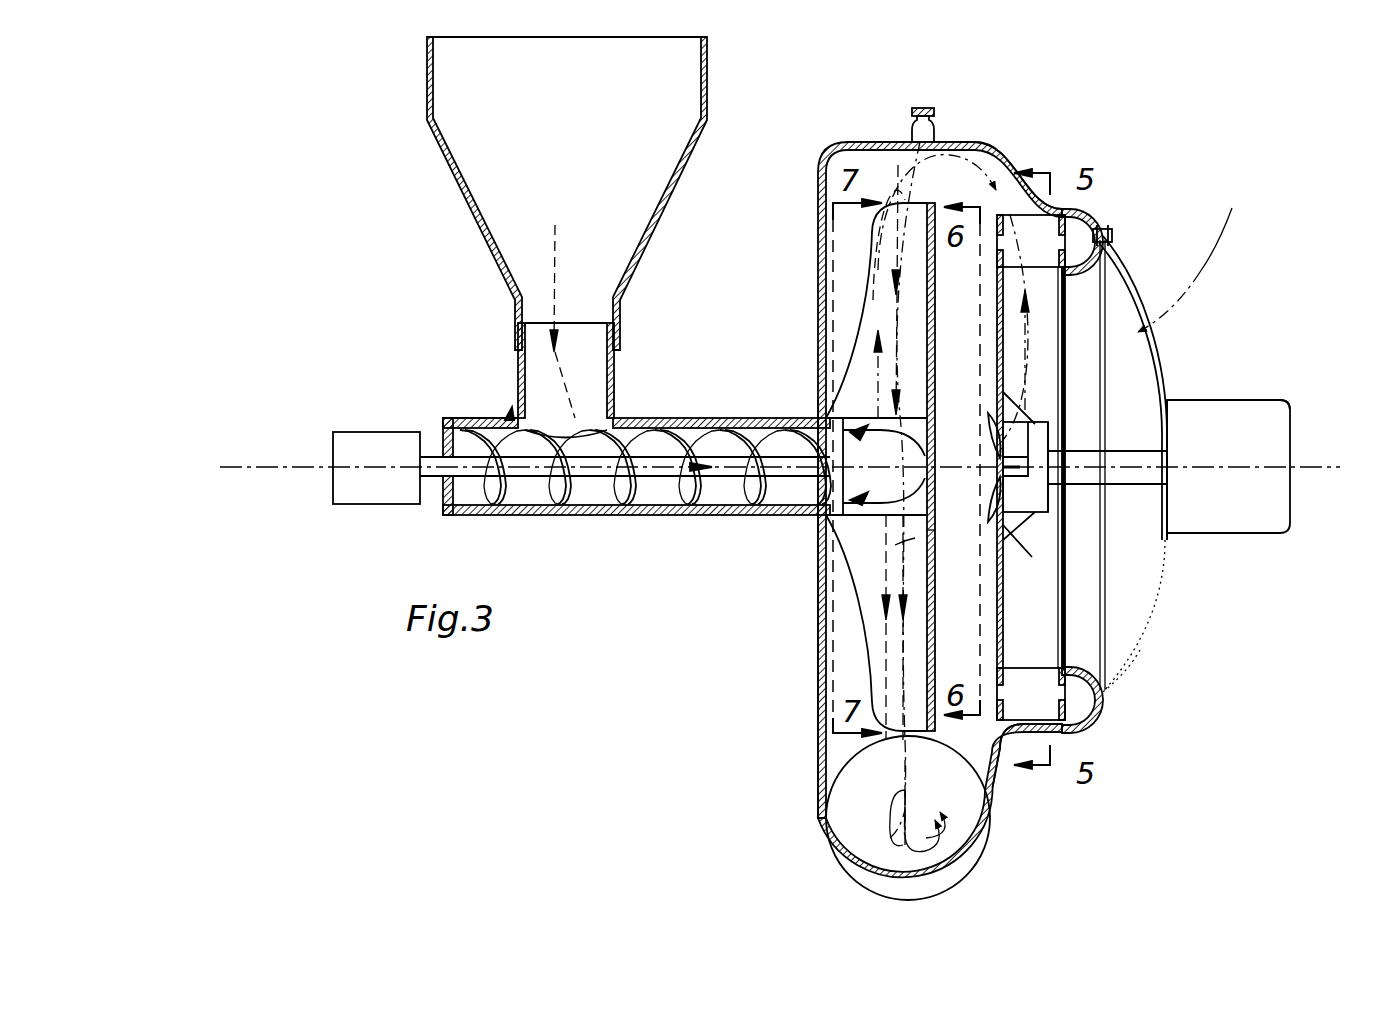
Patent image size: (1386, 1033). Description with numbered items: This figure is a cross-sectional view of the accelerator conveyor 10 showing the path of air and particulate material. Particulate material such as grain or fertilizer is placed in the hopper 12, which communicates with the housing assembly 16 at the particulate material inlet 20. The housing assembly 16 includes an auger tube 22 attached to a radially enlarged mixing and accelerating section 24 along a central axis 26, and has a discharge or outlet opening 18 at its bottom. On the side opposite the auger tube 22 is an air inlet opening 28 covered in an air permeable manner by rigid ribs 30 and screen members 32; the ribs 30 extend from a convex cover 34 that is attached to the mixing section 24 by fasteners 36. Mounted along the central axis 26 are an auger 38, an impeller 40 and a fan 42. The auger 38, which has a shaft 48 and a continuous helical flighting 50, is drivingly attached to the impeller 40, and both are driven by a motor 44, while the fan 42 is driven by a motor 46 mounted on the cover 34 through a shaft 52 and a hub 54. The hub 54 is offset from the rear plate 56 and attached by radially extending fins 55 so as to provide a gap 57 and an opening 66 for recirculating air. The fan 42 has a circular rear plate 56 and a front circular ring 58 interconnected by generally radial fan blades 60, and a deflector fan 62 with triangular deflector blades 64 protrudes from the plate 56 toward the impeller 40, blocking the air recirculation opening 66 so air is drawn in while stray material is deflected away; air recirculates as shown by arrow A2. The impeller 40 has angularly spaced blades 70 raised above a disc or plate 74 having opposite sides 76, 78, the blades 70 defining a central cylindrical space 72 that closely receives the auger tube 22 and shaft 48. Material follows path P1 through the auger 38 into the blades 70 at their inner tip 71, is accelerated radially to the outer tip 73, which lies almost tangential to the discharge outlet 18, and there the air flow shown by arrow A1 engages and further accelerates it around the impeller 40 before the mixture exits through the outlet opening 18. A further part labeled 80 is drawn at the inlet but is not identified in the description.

The accelerator conveyor 10 is at (814, 600).
The hopper 12 is at (707, 65).
The housing assembly 16 is at (815, 168).
The discharge or outlet opening 18 is at (950, 894).
The particulate material inlet 20 is at (618, 418).
The auger tube 22 is at (704, 418).
The mixing and accelerating section 24 is at (982, 145).
The central axis 26 is at (1210, 470).
The air inlet opening 28 is at (1134, 655).
The rigid ribs 30 is at (1166, 338).
The screen members 32 is at (1160, 585).
The convex cover 34 is at (1128, 262).
The fasteners 36 is at (1112, 233).
The auger 38 is at (510, 418).
The impeller 40 is at (860, 320).
The fan 42 is at (1000, 760).
The motor 44 is at (333, 445).
The motor 46 is at (1290, 404).
The shaft 48 is at (540, 500).
The continuous helical flighting 50 is at (563, 505).
The shaft 52 is at (1118, 486).
The hub 54 is at (1052, 432).
The fins 55 is at (1030, 425).
The rear plate or disc 56 is at (1003, 580).
The gap 57 is at (1048, 493).
The front circular ring 58 is at (1082, 213).
The fan blades 60 is at (1000, 250).
The deflector fan 62 is at (988, 422).
The deflector blades 64 is at (990, 503).
The air recirculation opening 66 is at (1012, 515).
The impeller blades 70 is at (862, 278).
The inner periphery or tip 71 is at (846, 424).
The central cylindrical space 72 is at (830, 512).
The outer periphery or tip 73 is at (912, 125).
The disc or plate 74 is at (935, 584).
The side 76 is at (935, 538).
The side 78 is at (895, 545).
The inlet cap 80 is at (925, 108).
The arrow A1 is at (1205, 300).
The arrow A2 is at (1003, 343).
The path P1 is at (560, 258).